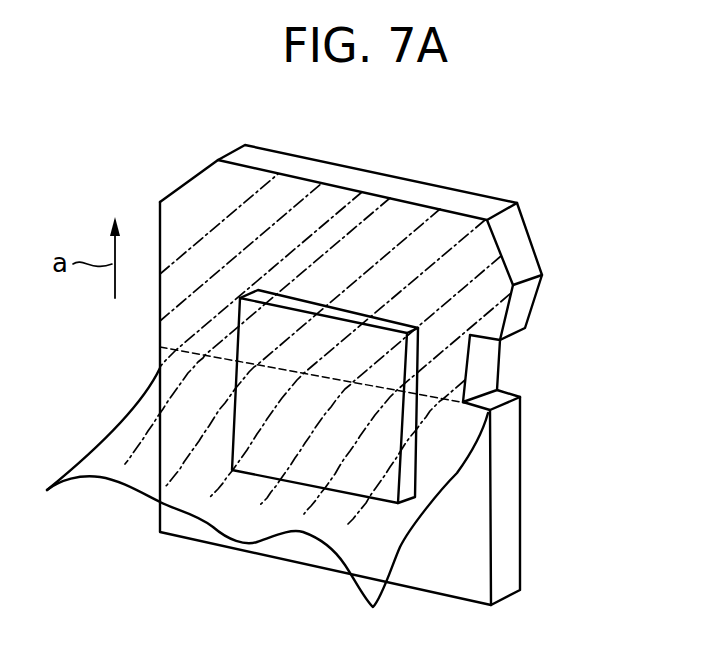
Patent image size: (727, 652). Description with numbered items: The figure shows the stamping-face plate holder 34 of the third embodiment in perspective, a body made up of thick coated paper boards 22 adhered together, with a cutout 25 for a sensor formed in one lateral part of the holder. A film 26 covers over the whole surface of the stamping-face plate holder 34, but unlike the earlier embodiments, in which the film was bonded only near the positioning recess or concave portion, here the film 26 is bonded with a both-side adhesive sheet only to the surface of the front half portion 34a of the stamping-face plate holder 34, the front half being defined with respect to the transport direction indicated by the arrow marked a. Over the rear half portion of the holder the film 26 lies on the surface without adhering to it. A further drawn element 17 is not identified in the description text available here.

The plate 34 is at (472, 175).
The bonding lines on plate surface 34a is at (477, 260).
The step portion 25 is at (507, 373).
The block 22 is at (522, 528).
The element 17 is at (376, 427).
The sheet 26 is at (400, 548).